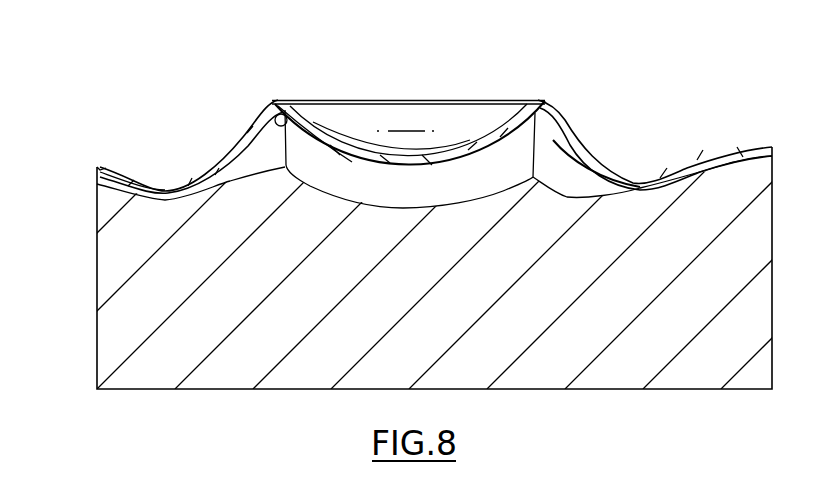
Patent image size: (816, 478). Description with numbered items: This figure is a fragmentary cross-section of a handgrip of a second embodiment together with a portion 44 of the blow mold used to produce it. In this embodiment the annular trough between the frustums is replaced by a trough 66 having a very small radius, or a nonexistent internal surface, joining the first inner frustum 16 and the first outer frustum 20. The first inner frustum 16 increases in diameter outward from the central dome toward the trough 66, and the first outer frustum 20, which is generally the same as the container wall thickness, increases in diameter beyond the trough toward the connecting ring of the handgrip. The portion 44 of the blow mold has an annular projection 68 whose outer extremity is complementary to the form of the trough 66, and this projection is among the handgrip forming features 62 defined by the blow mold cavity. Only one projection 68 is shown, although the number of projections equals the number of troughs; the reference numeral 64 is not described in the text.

The first inner frustum 16 is at (513, 123).
The first outer frustum 20 is at (560, 110).
The portion of the blow mold 44 is at (120, 303).
The handgrip forming features 62 is at (553, 143).
The second layer 64 is at (238, 138).
The trough 66 is at (283, 118).
The annular projection 68 is at (193, 173).